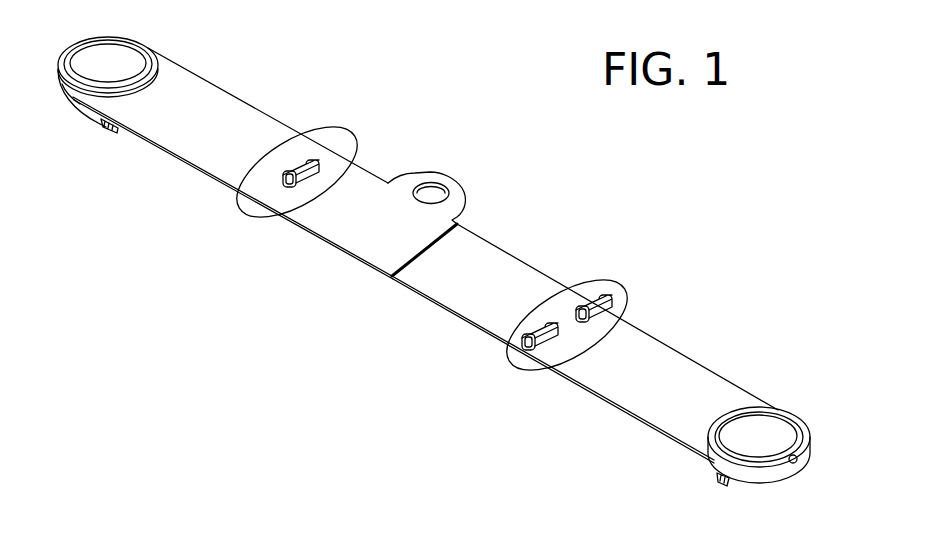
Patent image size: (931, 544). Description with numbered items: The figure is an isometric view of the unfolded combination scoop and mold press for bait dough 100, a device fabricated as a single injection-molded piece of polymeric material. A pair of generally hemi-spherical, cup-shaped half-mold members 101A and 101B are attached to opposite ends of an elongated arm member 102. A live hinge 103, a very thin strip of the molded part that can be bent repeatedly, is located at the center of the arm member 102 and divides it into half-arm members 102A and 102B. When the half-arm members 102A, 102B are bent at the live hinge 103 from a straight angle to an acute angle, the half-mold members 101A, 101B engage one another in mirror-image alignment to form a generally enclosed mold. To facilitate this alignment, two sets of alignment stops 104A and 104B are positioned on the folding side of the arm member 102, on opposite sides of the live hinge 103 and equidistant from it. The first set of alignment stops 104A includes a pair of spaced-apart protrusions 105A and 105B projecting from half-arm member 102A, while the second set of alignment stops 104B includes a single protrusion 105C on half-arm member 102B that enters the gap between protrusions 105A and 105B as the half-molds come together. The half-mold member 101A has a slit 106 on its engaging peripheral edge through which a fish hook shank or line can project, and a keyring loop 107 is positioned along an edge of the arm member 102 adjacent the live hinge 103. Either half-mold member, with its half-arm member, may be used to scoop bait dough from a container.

The combination scoop and mold press for bait dough 100 is at (340, 86).
The half-mold member 101A is at (777, 410).
The half-mold member 101B is at (110, 43).
The arm member 102 is at (425, 255).
The half-arm member 102A is at (613, 378).
The half-arm member 102B is at (210, 150).
The live hinge 103 is at (487, 218).
The first set of alignment stops 104A is at (620, 292).
The second set of alignment stops 104B is at (346, 140).
The protrusion 105A is at (598, 296).
The protrusion 105B is at (526, 344).
The protrusion 105C is at (288, 181).
The slit 106 is at (804, 478).
The keyring loop 107 is at (454, 184).